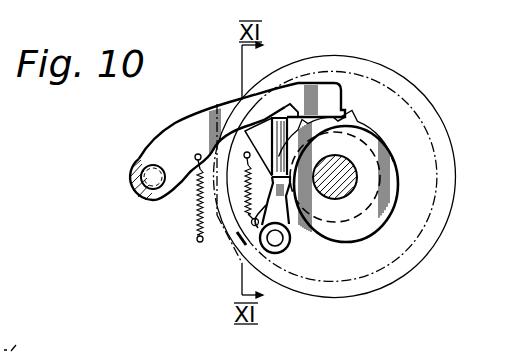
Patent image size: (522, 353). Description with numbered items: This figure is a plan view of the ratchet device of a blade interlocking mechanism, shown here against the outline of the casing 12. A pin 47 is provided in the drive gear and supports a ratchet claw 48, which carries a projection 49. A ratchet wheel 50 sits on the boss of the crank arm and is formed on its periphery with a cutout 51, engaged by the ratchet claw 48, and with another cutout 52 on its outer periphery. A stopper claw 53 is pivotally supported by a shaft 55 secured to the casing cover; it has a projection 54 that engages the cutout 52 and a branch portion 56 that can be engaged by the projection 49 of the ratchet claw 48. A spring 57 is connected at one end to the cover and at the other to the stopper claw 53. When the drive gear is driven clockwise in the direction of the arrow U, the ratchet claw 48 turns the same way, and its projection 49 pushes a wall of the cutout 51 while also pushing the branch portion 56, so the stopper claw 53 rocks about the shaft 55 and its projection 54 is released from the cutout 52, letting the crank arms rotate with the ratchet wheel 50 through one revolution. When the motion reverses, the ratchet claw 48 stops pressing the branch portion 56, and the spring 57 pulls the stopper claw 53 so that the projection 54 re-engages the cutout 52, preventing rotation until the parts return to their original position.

The drum 12 is at (362, 272).
The pin 47 is at (274, 256).
The ratchet claw 48 is at (278, 250).
The projection 49 is at (380, 127).
The ratchet wheel 50 is at (390, 203).
The cutout 51 is at (322, 236).
The cutout 52 is at (338, 117).
The stopper claw 53 is at (193, 116).
The projection 54 is at (321, 92).
The shaft 55 is at (140, 193).
The branch portion 56 is at (272, 172).
The spring 57 is at (198, 218).
The clockwise direction U is at (228, 246).